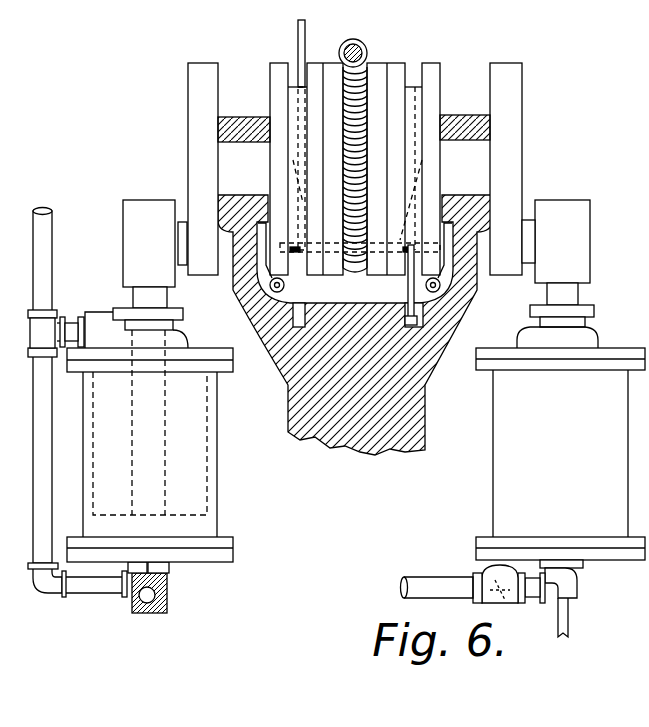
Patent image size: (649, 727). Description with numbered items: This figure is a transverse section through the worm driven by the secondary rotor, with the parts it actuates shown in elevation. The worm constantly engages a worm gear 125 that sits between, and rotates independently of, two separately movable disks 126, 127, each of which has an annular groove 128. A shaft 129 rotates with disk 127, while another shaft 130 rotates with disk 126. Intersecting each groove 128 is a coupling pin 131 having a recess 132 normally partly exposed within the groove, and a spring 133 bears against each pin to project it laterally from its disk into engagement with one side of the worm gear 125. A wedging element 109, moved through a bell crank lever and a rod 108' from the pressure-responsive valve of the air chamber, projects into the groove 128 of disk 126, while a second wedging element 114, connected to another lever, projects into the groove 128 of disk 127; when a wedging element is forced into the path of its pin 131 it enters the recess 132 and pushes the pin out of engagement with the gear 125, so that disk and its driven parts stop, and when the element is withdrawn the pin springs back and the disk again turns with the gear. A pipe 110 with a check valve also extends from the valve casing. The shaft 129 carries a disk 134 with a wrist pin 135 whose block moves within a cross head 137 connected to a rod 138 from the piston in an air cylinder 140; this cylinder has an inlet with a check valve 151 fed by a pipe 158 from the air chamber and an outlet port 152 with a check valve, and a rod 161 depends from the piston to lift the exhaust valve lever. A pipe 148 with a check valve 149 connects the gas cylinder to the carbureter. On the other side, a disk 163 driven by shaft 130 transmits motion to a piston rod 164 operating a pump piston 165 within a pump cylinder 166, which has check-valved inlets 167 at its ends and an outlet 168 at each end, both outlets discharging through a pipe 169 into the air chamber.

The rod 108' is at (264, 135).
The wedging element 109 is at (218, 180).
The pipe 110 is at (352, 47).
The wedging element 114 is at (432, 160).
The worm gear 125 is at (413, 73).
The disk 126 is at (284, 105).
The disk 127 is at (462, 56).
The annular groove 128 is at (292, 73).
The shaft 129 is at (490, 168).
The shaft 130 is at (237, 153).
The coupling pin 131 is at (296, 252).
The recess 132 is at (408, 247).
The spring 133 is at (263, 260).
The disk 134 is at (515, 92).
The wrist pin 135 is at (530, 238).
The cross head 137 is at (440, 185).
The rod 138 is at (580, 297).
The air cylinder 140 is at (560, 454).
The pipe 148 is at (2, 528).
The check valve 149 is at (8, 592).
The check valve 151 is at (503, 583).
The outlet port 152 is at (578, 590).
The pipe 158 is at (423, 587).
The rod 161 is at (568, 620).
The disk 163 is at (191, 88).
The piston rod 164 is at (143, 297).
The pump piston 165 is at (197, 508).
The pump cylinder 166 is at (88, 450).
The inlet 167 is at (105, 308).
The outlet 168 is at (70, 323).
The pipe 169 is at (42, 408).